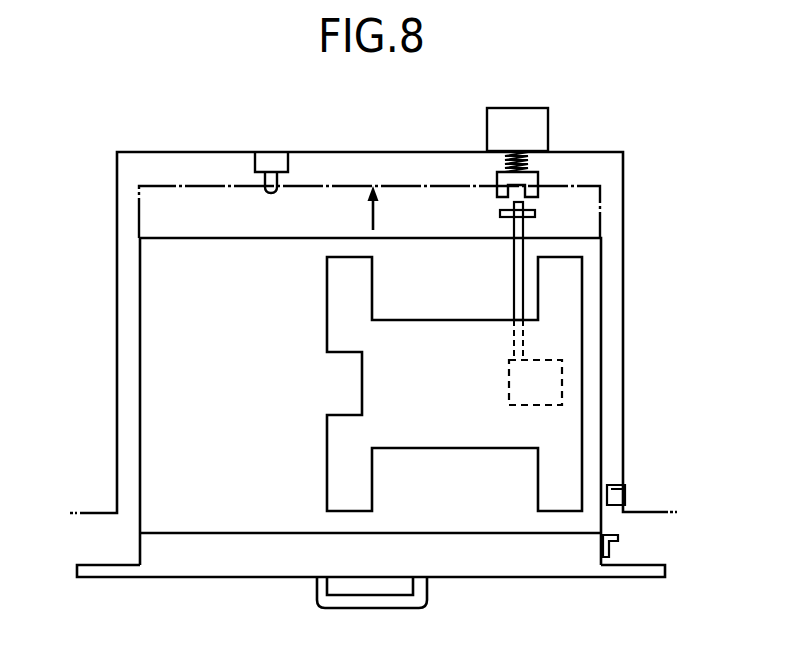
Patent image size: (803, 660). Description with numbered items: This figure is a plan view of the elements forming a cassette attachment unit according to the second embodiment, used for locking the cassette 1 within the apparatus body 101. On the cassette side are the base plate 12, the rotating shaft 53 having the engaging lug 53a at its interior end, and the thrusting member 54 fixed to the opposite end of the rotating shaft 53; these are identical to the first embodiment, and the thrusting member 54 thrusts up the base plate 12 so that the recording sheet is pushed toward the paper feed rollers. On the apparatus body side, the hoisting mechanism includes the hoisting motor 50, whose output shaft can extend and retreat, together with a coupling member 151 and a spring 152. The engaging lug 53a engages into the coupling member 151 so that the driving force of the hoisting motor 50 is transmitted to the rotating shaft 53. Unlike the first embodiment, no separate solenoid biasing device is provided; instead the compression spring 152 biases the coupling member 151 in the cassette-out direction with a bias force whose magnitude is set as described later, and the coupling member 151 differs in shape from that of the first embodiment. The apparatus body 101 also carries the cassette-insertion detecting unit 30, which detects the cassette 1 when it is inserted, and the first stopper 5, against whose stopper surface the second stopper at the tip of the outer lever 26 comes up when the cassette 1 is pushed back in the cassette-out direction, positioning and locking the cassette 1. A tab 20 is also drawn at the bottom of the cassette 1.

The cassette 1 is at (225, 578).
The first stopper 5 is at (625, 495).
The base plate 12 is at (437, 422).
The bottom tab 20 is at (368, 612).
The outer lever 26 is at (620, 540).
The cassette-insertion detecting unit 30 is at (273, 158).
The hoisting motor 50 is at (497, 113).
The rotating shaft 53 is at (512, 282).
The engaging lug 53a is at (537, 212).
The thrusting member 54 is at (520, 397).
The apparatus body 101 is at (103, 502).
The coupling member 151 is at (497, 193).
The spring 152 is at (503, 160).